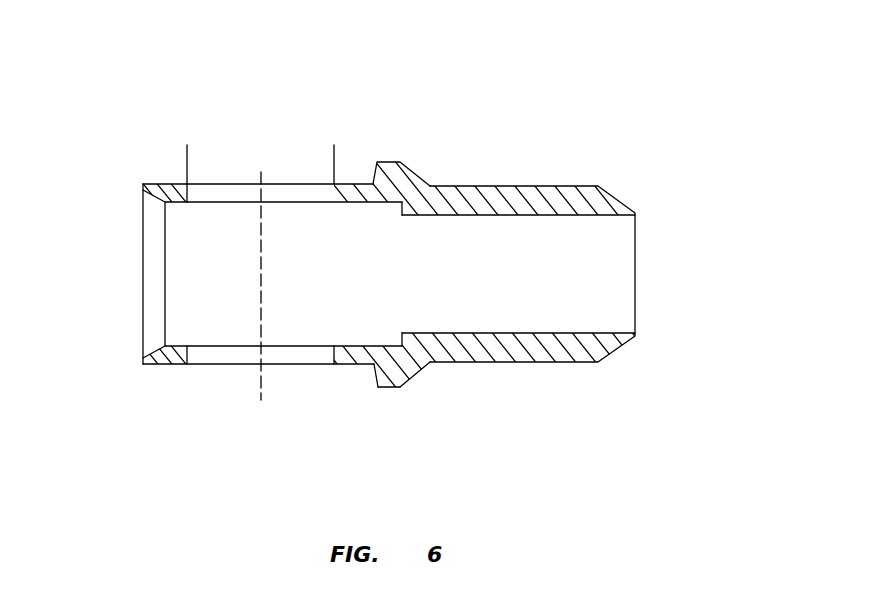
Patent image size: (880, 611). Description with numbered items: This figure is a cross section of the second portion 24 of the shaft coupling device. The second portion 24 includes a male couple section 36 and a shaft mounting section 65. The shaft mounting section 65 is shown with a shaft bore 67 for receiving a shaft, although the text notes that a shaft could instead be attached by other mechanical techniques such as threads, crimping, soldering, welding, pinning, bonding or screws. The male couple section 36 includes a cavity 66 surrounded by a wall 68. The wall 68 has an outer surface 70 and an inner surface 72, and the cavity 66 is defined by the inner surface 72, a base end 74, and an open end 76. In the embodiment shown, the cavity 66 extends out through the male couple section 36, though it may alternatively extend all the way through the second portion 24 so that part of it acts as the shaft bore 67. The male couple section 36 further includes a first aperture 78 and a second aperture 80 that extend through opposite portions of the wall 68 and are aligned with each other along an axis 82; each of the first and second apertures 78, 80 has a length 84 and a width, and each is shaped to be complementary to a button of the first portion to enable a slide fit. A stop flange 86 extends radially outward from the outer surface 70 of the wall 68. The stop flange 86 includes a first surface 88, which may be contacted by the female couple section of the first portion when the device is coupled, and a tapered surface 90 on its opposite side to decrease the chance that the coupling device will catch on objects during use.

The second portion 24 is at (688, 216).
The male couple section 36 is at (400, 103).
The shaft mounting section 65 is at (423, 158).
The cavity 66 is at (292, 317).
The shaft bore 67 is at (618, 315).
The wall 68 is at (342, 358).
The outer surface 70 is at (357, 364).
The inner surface 72 is at (387, 343).
The base end 74 is at (402, 207).
The open end 76 is at (143, 292).
The first aperture 78 is at (200, 360).
The second aperture 80 is at (228, 195).
The axis 82 is at (261, 397).
The length 84 is at (334, 150).
The stop flange 86 is at (395, 400).
The first surface 88 is at (375, 178).
The tapered surface 90 is at (413, 370).